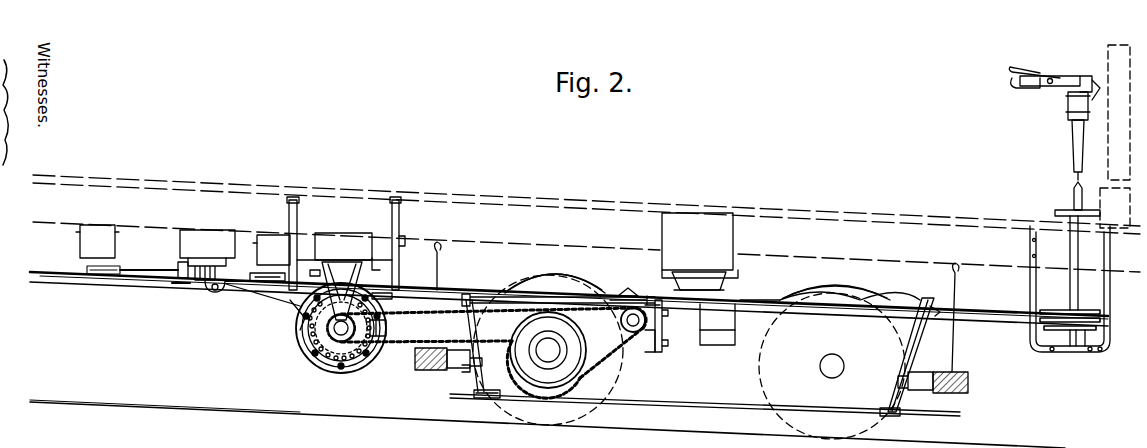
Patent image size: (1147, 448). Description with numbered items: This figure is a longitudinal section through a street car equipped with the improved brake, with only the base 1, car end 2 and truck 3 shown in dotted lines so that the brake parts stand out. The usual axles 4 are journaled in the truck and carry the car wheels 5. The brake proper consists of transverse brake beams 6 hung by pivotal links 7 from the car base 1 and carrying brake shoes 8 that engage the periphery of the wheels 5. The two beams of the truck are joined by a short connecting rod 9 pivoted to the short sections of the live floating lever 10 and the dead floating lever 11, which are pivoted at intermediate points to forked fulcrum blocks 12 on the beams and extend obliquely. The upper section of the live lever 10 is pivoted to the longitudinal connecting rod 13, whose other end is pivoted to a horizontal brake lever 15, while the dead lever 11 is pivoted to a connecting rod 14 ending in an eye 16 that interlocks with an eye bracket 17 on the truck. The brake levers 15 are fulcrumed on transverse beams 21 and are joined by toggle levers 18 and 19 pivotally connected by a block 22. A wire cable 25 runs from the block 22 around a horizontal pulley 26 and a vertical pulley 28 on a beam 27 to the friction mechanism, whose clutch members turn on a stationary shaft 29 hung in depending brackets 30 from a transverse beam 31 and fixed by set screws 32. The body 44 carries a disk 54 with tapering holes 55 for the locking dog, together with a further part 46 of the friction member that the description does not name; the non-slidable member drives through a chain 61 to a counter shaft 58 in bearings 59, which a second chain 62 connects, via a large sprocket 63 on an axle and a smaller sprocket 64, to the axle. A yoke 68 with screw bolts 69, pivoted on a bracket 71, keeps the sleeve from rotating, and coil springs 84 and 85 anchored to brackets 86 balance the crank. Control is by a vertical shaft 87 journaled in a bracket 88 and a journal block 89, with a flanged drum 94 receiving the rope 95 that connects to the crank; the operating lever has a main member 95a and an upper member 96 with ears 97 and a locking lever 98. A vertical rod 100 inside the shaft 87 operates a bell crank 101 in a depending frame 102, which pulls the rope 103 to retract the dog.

The base 1 is at (604, 214).
The car end 2 is at (1108, 50).
The truck 3 is at (795, 292).
The axles 4 is at (689, 357).
The car wheels 5 is at (697, 331).
The brake beams 6 is at (416, 368).
The pivotal links 7 is at (697, 307).
The brake shoes 8 is at (474, 394).
The connecting rod 9 is at (680, 402).
The live floating lever 10 is at (908, 356).
The dead floating lever 11 is at (474, 378).
The forked fulcrum blocks 12 is at (449, 372).
The longitudinal connecting rod 13 is at (875, 308).
The connecting rod 14 is at (487, 296).
The horizontal brake lever 15 is at (98, 276).
The eye 16 is at (626, 290).
The eye bracket 17 is at (649, 296).
The toggle lever 18 is at (240, 286).
The toggle lever 19 is at (150, 285).
The transverse beams 21 is at (183, 245).
The pivotal block 22 is at (178, 268).
The wire cable 25 is at (300, 306).
The horizontal pulley 26 is at (180, 288).
The beam 27 is at (207, 255).
The vertical pulley 28 is at (213, 292).
The stationary shaft 29 is at (326, 355).
The depending brackets 30 is at (318, 342).
The transverse beam 31 is at (343, 246).
The set screws 32 is at (342, 334).
The body 44 is at (356, 362).
The pin 46 is at (340, 369).
The disk 54 is at (311, 326).
The tapering holes 55 is at (382, 344).
The counter shaft 58 is at (664, 320).
The bearings 59 is at (660, 338).
The chain 61 is at (480, 325).
The second chain 62 is at (622, 357).
The large sprocket 63 is at (548, 350).
The smaller sprocket 64 is at (620, 323).
The yoke 68 is at (389, 327).
The screw bolts 69 is at (305, 320).
The bracket 71 is at (348, 280).
The coil spring 84 is at (381, 263).
The coil spring 85 is at (320, 270).
The brackets 86 is at (392, 242).
The vertical shaft 87 is at (1069, 288).
The bracket 88 is at (1068, 106).
The journal block 89 is at (1068, 210).
The flanged drum 94 is at (1082, 312).
The rope 95 is at (39, 272).
The main member 95a is at (1012, 88).
The upper member 96 is at (1024, 72).
The ears 97 is at (1050, 78).
The locking lever 98 is at (1060, 77).
The vertical rod 100 is at (1070, 340).
The bell crank 101 is at (1084, 336).
The depending frame 102 is at (1040, 350).
The rope 103 is at (52, 284).